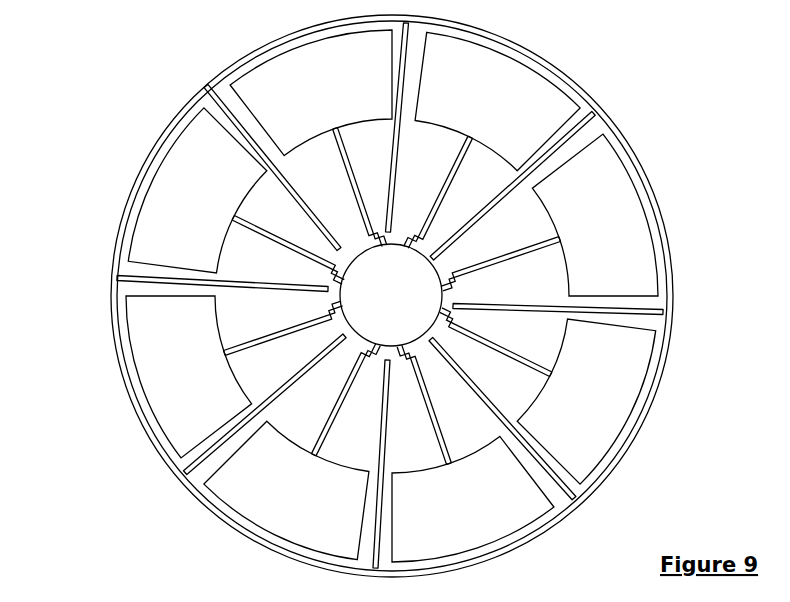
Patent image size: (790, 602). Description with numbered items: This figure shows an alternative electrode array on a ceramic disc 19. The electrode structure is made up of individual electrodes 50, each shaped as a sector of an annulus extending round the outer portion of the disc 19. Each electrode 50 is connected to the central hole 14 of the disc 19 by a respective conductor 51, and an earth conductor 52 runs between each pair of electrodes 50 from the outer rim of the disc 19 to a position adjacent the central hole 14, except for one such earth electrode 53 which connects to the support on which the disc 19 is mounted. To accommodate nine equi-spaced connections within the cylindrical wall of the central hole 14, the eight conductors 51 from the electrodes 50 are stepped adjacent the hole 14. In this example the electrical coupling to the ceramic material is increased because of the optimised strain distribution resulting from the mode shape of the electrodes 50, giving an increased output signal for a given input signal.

The central hole 14 is at (397, 310).
The disc 19 is at (628, 151).
The electrode 50 is at (170, 182).
The conductor 51 is at (253, 347).
The earth conductor 52 is at (127, 282).
The earth electrode 53 is at (592, 112).